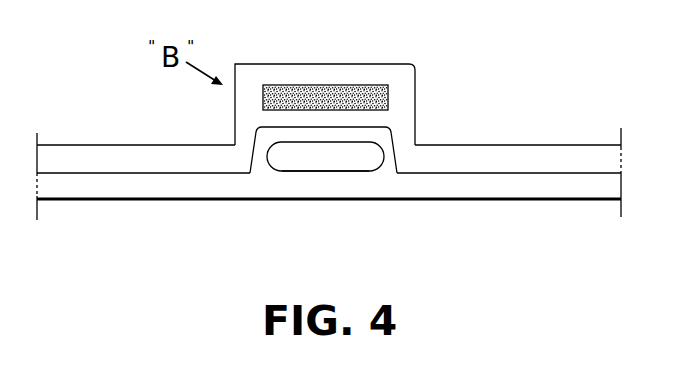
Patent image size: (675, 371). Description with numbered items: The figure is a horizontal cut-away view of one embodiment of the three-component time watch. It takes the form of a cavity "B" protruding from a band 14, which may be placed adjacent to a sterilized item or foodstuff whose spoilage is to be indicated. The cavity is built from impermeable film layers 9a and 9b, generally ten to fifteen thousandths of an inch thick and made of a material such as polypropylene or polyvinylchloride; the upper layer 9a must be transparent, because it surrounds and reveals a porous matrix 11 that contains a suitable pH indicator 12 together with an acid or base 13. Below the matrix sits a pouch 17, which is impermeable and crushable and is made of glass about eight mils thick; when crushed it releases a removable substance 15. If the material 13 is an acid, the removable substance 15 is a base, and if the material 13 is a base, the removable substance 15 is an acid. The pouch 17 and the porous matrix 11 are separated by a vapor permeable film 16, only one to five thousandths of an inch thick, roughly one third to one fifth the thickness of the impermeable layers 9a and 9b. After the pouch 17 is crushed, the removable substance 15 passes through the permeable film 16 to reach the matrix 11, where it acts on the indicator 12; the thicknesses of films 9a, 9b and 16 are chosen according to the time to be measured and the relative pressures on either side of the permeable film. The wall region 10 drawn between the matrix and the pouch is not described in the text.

The impermeable film layer 9a is at (235, 108).
The impermeable film layer 9b is at (250, 199).
The raised blister wall 10 is at (392, 137).
The porous matrix 11 is at (376, 86).
The pH indicator 12 is at (282, 86).
The acid or base 13 is at (318, 86).
The band 14 is at (104, 145).
The removable substance 15 is at (327, 159).
The vapor permeable film 16 is at (520, 174).
The pouch 17 is at (368, 172).